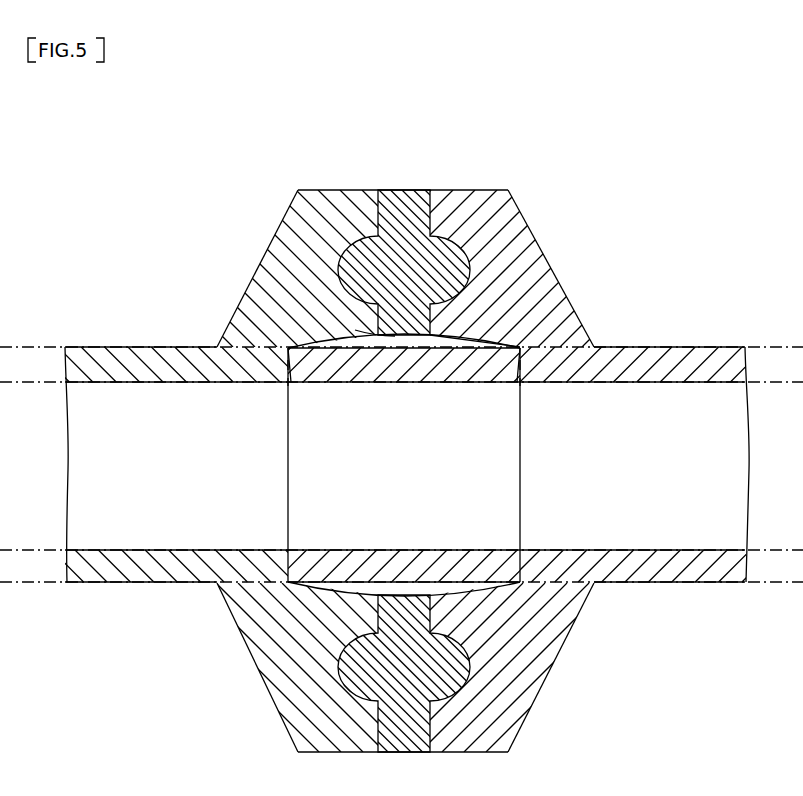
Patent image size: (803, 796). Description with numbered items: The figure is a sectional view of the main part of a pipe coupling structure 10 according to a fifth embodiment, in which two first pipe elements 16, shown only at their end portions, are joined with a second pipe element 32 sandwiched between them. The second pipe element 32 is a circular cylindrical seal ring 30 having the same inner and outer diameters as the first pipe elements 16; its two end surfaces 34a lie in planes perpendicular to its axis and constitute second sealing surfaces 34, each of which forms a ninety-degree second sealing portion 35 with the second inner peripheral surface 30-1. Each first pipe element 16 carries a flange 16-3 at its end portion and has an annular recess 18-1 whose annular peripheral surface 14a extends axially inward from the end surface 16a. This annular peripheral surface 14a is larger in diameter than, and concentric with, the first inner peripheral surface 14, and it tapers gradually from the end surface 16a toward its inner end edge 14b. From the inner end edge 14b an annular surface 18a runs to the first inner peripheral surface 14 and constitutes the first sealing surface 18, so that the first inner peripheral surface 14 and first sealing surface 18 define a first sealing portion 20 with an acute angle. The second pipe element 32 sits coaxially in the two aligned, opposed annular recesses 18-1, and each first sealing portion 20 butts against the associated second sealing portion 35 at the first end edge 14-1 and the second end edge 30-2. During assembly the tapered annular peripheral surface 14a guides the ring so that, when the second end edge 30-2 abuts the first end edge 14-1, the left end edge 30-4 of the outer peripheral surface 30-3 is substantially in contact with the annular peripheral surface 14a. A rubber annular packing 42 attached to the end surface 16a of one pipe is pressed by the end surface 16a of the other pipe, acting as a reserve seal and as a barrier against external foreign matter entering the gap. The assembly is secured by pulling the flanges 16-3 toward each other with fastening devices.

The pipe coupling structure 10 is at (401, 383).
The first inner peripheral surface 14 is at (142, 383).
The first end edge 14-1 is at (550, 497).
The annular peripheral surface 14a is at (350, 338).
The inner end edge 14b is at (290, 347).
The first pipe element 16 is at (404, 435).
The flange 16-3 is at (325, 189).
The end surface 16a is at (401, 435).
The first sealing surface 18 is at (405, 403).
The annular recess 18-1 is at (360, 330).
The annular surface 18a is at (590, 425).
The first sealing portion 20 is at (283, 363).
The shaft member 30 is at (402, 533).
The second inner peripheral surface 30-1 is at (395, 384).
The second end edge 30-2 is at (404, 465).
The outer peripheral surface 30-3 is at (290, 590).
The left end edge 30-4 is at (402, 611).
The second pipe element 32 is at (495, 345).
The second sealing surface 34 is at (288, 582).
The end surface 34a is at (402, 557).
The second sealing portion 35 is at (283, 384).
The annular packing 42 is at (412, 189).